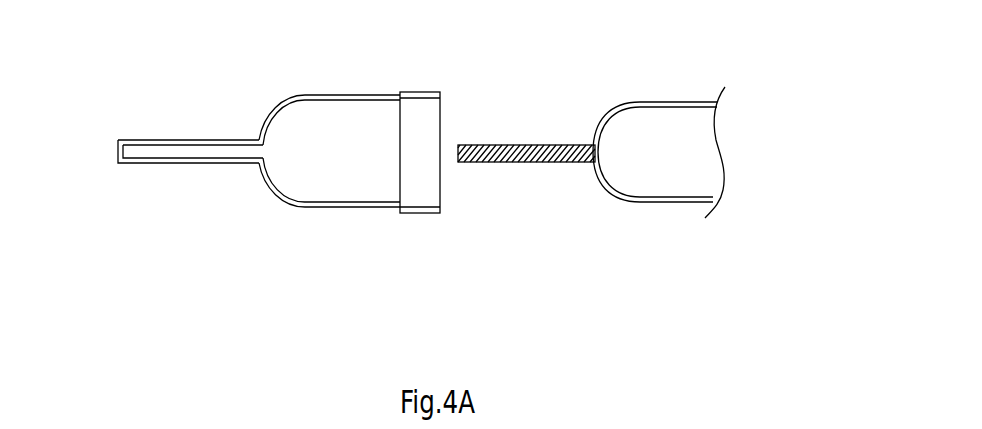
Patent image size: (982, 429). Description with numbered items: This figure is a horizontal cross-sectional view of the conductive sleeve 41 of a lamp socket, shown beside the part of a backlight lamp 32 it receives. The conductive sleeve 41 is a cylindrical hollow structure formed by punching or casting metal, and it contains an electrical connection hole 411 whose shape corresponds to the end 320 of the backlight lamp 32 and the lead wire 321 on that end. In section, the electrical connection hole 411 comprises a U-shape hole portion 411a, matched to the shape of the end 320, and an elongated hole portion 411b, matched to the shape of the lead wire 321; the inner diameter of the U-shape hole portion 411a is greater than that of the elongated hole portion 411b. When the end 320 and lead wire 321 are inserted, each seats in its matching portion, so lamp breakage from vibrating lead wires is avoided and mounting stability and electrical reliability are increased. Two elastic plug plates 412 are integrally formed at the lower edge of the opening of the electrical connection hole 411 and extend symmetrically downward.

The conductive sleeve 41 is at (267, 117).
The electrical connection hole 411 is at (266, 299).
The U-shape hole portion 411a is at (302, 158).
The elongated hole portion 411b is at (212, 153).
The elastic plug plates 412 is at (425, 213).
The backlight lamp 32 is at (680, 200).
The end of the backlight lamp 320 is at (617, 197).
The lead wire 321 is at (518, 163).